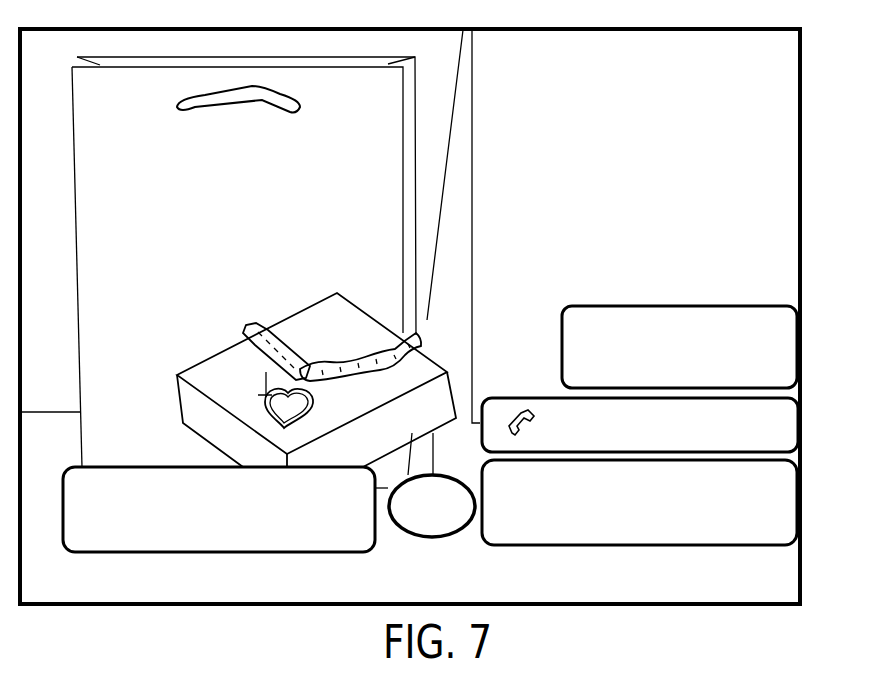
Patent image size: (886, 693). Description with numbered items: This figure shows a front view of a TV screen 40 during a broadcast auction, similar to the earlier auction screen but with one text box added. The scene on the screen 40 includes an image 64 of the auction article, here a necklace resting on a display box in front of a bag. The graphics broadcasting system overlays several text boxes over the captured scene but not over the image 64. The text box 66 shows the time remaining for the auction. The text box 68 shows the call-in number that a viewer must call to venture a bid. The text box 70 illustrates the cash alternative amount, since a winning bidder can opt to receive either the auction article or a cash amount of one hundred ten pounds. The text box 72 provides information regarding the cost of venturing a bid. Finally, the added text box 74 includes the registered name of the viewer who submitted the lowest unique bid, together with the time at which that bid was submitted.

The screen 40 is at (802, 190).
The image of the auction article 64 is at (260, 323).
The text box 66 is at (428, 537).
The text box 68 is at (786, 427).
The text box 70 is at (630, 307).
The text box 72 is at (786, 505).
The text box 74 is at (202, 553).